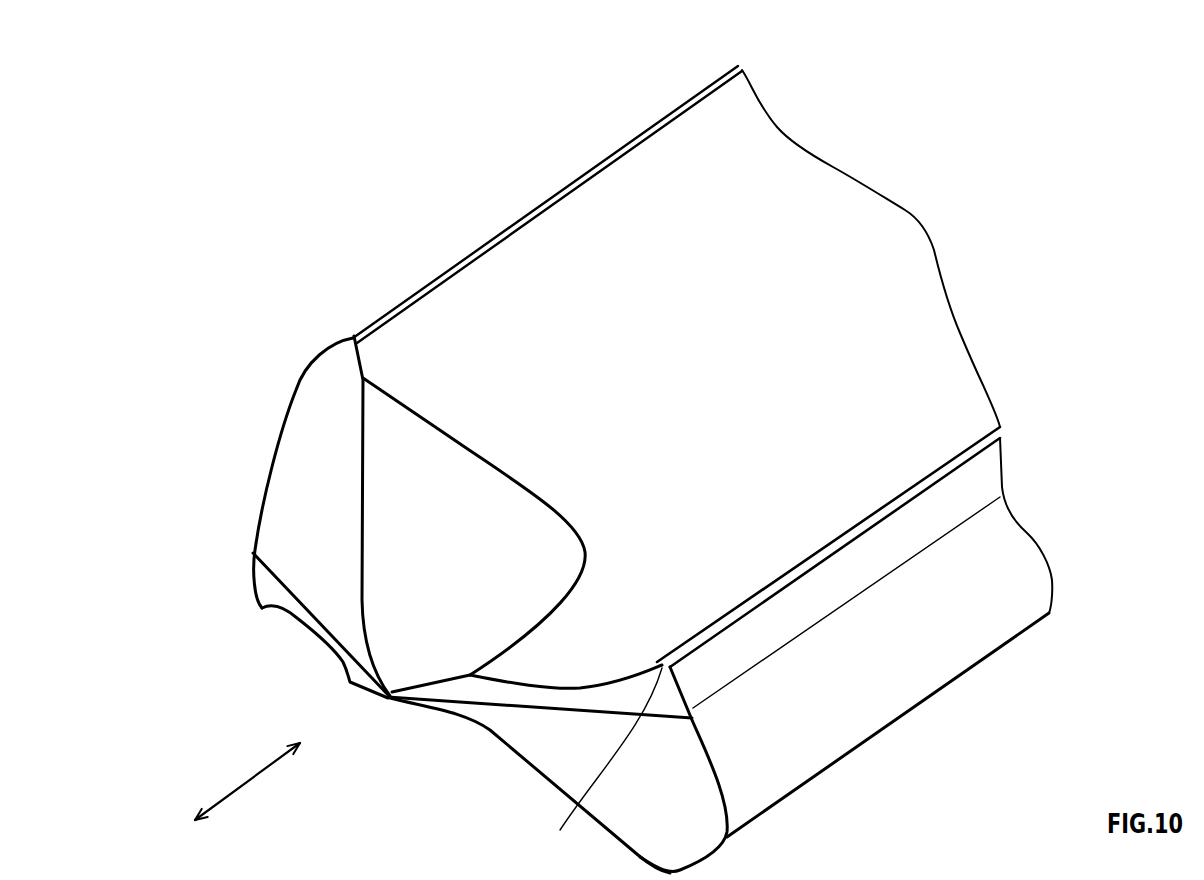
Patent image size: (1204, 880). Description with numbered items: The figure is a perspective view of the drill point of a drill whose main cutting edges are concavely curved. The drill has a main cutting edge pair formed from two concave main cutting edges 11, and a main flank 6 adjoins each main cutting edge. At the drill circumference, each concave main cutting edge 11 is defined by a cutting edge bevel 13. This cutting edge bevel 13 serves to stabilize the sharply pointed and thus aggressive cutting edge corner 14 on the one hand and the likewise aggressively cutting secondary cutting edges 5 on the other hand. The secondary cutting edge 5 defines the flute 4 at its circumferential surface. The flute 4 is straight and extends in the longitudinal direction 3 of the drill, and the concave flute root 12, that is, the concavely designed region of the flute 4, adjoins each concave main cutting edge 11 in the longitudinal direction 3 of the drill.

The longitudinal direction 3 is at (252, 777).
The flute 4 is at (888, 241).
The secondary cutting edge 5 is at (948, 480).
The main flank 6 is at (305, 447).
The concave main cutting edge 11 is at (313, 630).
The concave flute root 12 is at (953, 369).
The cutting edge bevel 13 is at (1002, 437).
The cutting edge corner 14 is at (602, 767).